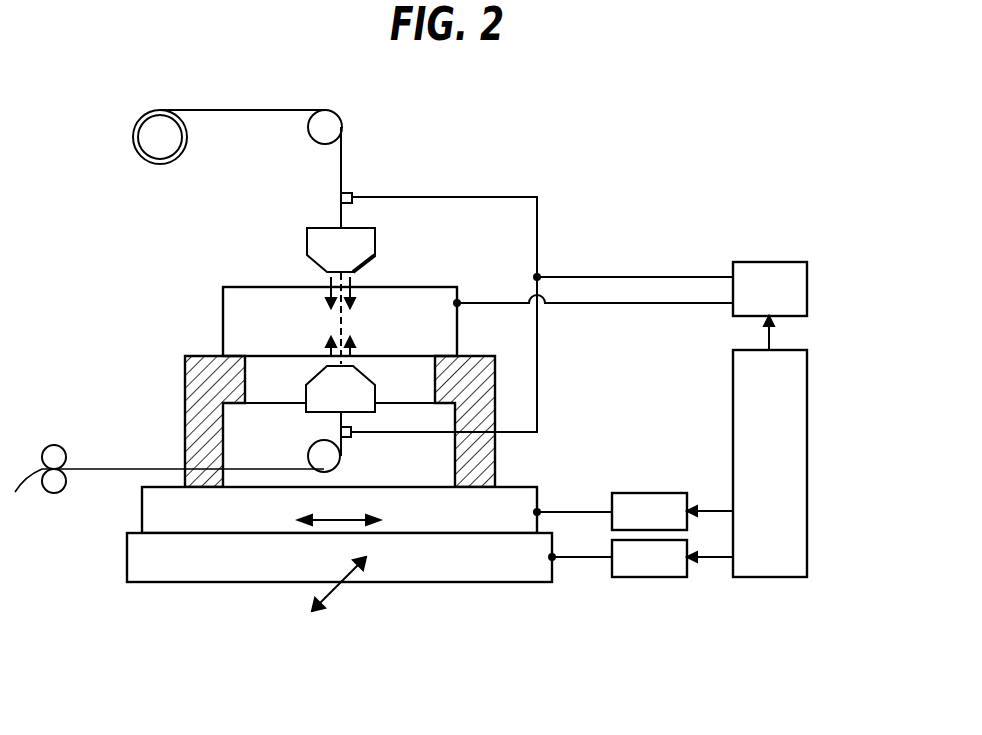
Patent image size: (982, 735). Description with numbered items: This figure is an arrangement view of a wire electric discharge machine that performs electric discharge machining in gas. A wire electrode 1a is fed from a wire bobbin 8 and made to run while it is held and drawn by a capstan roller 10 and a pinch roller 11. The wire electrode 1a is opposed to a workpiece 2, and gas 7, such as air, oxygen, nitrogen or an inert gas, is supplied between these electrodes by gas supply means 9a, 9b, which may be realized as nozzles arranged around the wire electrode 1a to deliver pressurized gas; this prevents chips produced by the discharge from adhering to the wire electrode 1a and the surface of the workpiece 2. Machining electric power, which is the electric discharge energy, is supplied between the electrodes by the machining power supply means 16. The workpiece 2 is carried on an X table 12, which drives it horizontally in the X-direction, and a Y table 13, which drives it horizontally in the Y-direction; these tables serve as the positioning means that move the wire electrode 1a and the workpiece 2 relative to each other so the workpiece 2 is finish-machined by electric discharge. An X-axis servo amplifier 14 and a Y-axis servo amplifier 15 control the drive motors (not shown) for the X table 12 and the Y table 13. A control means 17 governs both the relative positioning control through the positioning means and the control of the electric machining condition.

The wire electrode 1a is at (342, 160).
The workpiece 2 is at (223, 322).
The gas 7 is at (357, 280).
The wire bobbin 8 is at (134, 140).
The gas supply means 9a is at (307, 245).
The gas supply means 9b is at (306, 396).
The capstan roller 10 is at (50, 497).
The pinch roller 11 is at (52, 446).
The X table 12 is at (142, 515).
The Y table 13 is at (127, 560).
The X-axis servo amplifier 14 is at (650, 493).
The Y-axis servo amplifier 15 is at (650, 577).
The machining power supply means 16 is at (770, 262).
The control means 17 is at (807, 462).